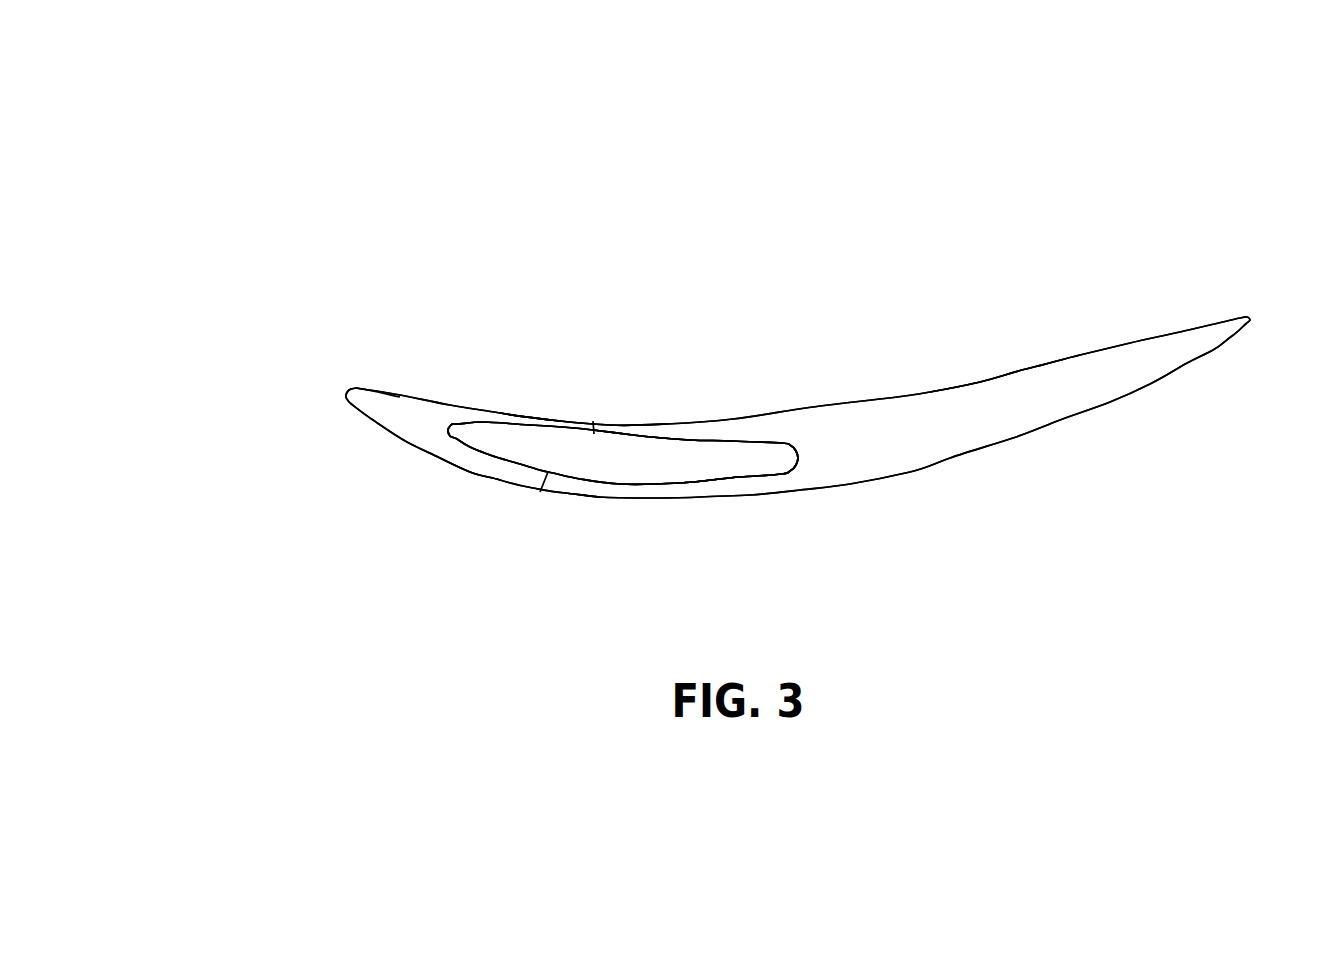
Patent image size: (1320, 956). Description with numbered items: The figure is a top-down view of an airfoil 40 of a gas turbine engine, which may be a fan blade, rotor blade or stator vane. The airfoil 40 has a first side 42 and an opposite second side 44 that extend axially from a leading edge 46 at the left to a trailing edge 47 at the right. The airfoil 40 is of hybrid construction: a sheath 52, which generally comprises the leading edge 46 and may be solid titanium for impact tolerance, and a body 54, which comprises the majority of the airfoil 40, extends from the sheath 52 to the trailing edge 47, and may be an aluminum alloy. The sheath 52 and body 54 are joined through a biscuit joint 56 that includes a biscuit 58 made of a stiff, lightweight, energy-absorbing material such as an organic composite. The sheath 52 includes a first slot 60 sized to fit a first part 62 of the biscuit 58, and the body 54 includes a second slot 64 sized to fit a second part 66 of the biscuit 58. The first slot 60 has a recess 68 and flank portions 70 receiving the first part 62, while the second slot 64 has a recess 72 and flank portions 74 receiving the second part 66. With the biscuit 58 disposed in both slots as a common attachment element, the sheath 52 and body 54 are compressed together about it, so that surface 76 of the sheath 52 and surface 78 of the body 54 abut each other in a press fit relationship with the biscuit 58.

The airfoil 40 is at (204, 166).
The first side 42 is at (856, 488).
The second side 44 is at (847, 400).
The leading edge 46 is at (345, 399).
The trailing edge 47 is at (1250, 319).
The sheath 52 is at (400, 413).
The body 54 is at (1008, 408).
The biscuit joint 56 is at (544, 403).
The biscuit 58 is at (608, 460).
The first slot 60 is at (498, 461).
The first part 62 is at (528, 457).
The second slot 64 is at (722, 478).
The second part 66 is at (675, 476).
The recess 68 is at (445, 432).
The flank portions 70 is at (530, 425).
The recess 72 is at (793, 443).
The flank portions 74 is at (682, 437).
The surface 76 is at (600, 431).
The surface 78 is at (590, 430).